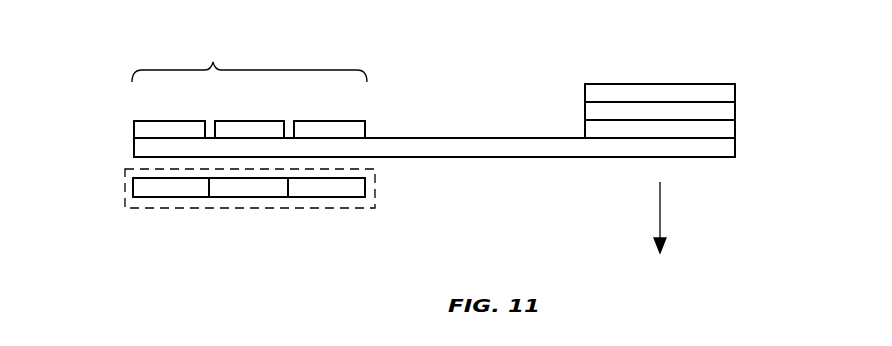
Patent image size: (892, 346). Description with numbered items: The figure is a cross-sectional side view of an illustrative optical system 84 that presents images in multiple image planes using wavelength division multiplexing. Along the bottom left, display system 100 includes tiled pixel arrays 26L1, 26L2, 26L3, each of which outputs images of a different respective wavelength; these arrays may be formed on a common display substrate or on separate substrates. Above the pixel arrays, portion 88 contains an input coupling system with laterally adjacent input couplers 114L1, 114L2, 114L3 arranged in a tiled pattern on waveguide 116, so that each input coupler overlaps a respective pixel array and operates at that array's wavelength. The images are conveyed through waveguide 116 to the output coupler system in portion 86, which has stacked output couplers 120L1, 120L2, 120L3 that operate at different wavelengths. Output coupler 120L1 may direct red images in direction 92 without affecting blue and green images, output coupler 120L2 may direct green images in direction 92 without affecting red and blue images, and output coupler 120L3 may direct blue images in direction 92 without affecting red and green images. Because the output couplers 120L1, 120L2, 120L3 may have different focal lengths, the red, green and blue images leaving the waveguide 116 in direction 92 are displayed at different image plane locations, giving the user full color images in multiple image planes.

The optical system 84 is at (493, 59).
The portion 86 is at (657, 62).
The portion 88 is at (249, 59).
The direction 92 is at (660, 213).
The display system 100 is at (125, 184).
The waveguide 116 is at (510, 148).
The input coupler 114L1 is at (167, 121).
The input coupler 114L2 is at (245, 121).
The input coupler 114L3 is at (326, 121).
The output coupler 120L1 is at (723, 131).
The output coupler 120L2 is at (723, 111).
The output coupler 120L3 is at (723, 91).
The pixel array 26L1 is at (165, 198).
The pixel array 26L2 is at (237, 198).
The pixel array 26L3 is at (312, 198).